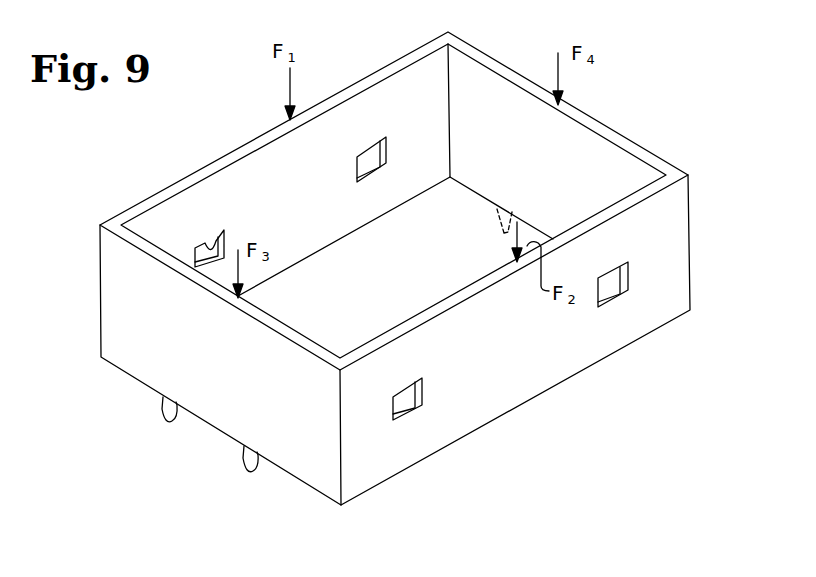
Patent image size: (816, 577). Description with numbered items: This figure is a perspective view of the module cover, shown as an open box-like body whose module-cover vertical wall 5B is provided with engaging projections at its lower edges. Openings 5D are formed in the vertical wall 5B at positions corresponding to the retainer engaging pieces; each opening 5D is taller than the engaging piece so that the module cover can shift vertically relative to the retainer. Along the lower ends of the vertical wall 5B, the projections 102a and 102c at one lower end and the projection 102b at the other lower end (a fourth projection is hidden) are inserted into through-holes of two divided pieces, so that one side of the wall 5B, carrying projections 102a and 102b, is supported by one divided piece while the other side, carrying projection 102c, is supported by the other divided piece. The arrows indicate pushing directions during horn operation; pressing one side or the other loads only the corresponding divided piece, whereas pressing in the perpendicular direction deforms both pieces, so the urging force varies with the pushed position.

The module-cover vertical wall 5B is at (660, 165).
The opening 5D is at (215, 238).
The engaging projection 102a is at (160, 410).
The engaging projection 102b is at (505, 230).
The engaging projection 102c is at (257, 462).